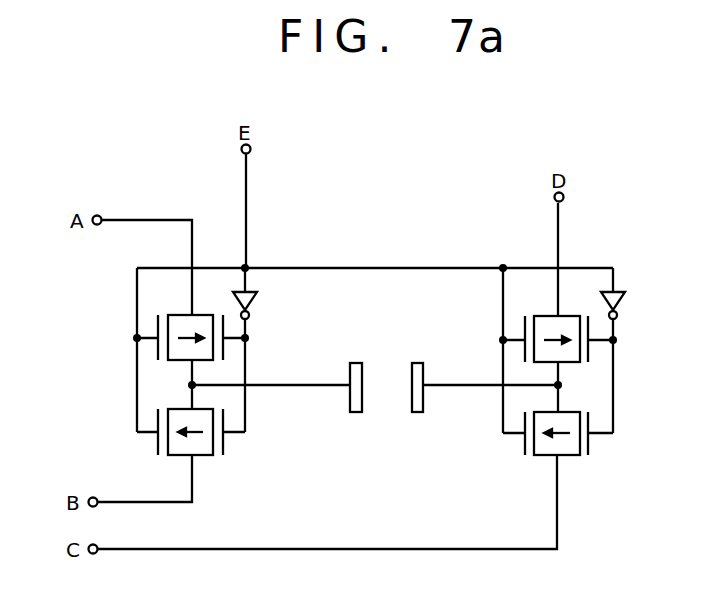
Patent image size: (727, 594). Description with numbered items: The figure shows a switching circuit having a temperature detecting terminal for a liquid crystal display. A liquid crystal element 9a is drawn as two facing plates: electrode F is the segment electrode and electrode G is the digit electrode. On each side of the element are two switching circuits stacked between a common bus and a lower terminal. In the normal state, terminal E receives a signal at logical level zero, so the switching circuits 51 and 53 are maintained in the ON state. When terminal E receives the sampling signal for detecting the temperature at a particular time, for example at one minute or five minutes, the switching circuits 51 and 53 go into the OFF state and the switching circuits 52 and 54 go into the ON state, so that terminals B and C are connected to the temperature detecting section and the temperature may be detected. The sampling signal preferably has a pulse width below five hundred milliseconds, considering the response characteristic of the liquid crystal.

The capacitor 9a is at (384, 372).
The switching circuit 51 is at (190, 315).
The switching circuit 52 is at (213, 457).
The switching circuit 53 is at (544, 318).
The switching circuit 54 is at (550, 456).